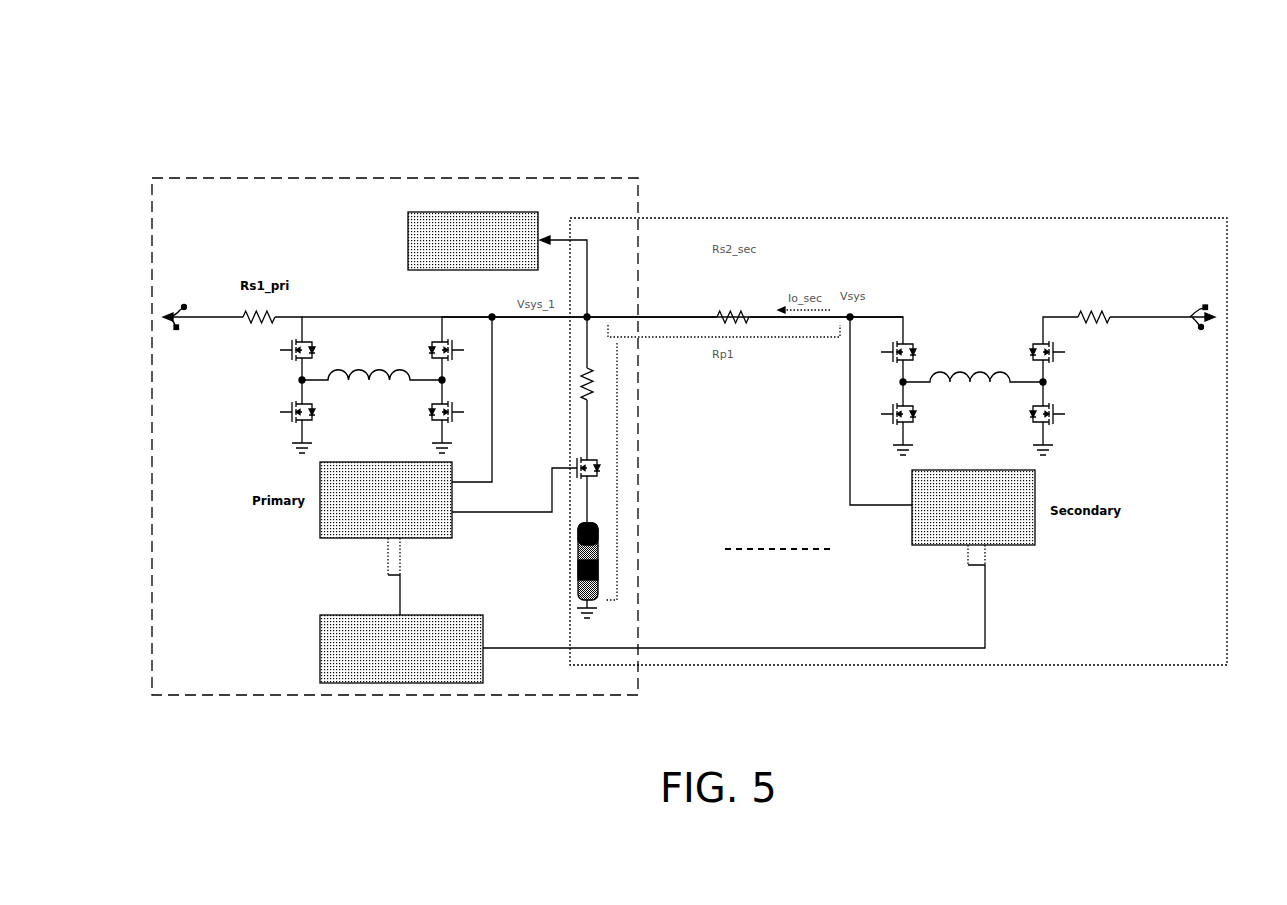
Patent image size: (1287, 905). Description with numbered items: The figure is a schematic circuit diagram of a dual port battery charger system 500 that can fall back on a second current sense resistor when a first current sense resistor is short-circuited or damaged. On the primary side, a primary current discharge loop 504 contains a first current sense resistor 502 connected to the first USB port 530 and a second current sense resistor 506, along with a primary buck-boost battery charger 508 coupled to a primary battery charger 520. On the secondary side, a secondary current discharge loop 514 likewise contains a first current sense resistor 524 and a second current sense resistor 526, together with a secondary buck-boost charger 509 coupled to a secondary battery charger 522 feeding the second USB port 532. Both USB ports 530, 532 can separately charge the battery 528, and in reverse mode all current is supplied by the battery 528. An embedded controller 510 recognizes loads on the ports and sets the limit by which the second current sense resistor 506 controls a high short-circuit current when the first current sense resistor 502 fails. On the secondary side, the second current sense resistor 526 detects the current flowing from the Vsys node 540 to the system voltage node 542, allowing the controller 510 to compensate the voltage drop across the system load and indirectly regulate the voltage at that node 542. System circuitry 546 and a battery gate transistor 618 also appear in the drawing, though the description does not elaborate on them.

The dual port battery charger system 500 is at (1163, 73).
The first current sense resistor 502 is at (268, 328).
The primary current discharge loop 504 is at (149, 610).
The second current sense resistor 506 is at (600, 377).
The primary buck-boost battery charger 508 is at (396, 363).
The secondary buck-boost charger 509 is at (1000, 365).
The embedded controller 510 is at (340, 635).
The secondary current discharge loop 514 is at (1013, 215).
The primary battery charger 520 is at (330, 490).
The secondary battery charger 522 is at (932, 548).
The first current sense resistor of the secondary loop 524 is at (757, 332).
The second current sense resistor of the secondary loop 526 is at (1103, 338).
The battery 528 is at (597, 540).
The first USB port 530 is at (170, 280).
The second USB port 532 is at (1162, 268).
The Vsys node 540 is at (857, 305).
The Vsys_1 node 542 is at (585, 300).
The system circuitry 546 is at (417, 236).
The battery gate (BGATE) transistor 618 is at (585, 452).